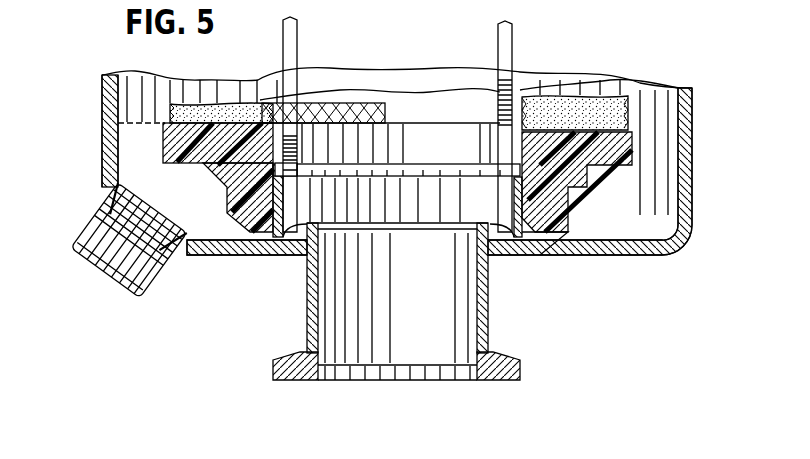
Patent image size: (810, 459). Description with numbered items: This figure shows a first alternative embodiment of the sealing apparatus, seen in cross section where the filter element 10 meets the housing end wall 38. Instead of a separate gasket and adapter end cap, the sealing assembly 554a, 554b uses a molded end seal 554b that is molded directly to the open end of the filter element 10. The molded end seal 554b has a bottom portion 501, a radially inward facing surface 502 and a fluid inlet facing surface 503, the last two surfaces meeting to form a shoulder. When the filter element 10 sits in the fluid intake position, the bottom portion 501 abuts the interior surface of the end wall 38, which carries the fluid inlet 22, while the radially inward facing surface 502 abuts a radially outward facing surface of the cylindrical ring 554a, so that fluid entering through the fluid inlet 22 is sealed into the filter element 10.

The filter element 10 is at (633, 108).
The fluid inlet 22 is at (432, 370).
The end wall 38 is at (633, 241).
The bottom portion 501 is at (273, 250).
The radially inward facing surface 502 is at (270, 207).
The fluid inlet facing surface 503 is at (270, 150).
The cylindrical ring 554a is at (538, 247).
The molded end seal 554b is at (633, 150).